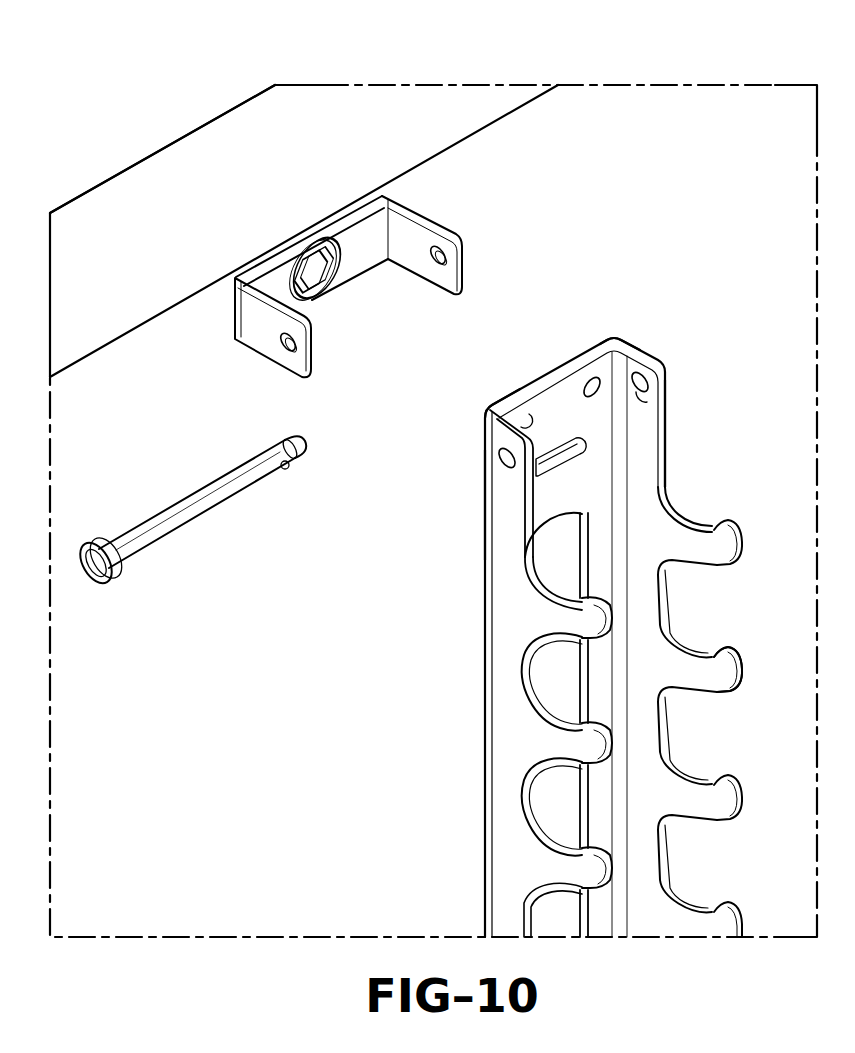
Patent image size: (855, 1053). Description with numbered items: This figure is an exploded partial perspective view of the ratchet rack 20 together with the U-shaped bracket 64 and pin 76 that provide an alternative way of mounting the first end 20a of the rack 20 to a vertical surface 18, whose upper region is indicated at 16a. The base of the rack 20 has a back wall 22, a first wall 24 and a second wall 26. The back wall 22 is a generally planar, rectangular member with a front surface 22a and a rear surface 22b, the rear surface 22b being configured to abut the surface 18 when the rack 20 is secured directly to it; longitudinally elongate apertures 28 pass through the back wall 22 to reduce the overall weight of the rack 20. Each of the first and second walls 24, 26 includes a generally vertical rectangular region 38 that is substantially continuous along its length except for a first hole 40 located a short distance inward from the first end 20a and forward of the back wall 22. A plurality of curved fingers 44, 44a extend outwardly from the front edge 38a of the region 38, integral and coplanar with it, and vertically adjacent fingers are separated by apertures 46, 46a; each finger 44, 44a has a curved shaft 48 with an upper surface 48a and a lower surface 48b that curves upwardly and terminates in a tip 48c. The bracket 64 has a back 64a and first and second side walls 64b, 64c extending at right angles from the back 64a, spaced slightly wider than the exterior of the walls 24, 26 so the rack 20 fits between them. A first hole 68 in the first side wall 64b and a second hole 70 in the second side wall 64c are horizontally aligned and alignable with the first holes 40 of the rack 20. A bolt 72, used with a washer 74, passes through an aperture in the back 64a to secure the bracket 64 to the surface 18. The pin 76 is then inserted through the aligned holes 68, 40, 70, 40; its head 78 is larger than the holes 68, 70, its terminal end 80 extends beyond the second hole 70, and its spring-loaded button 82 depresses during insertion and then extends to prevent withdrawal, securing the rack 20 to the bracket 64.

The vertical surface 18 is at (676, 133).
The upper surface of mounting structure 16a is at (165, 128).
The U-shaped bracket 64 is at (347, 288).
The back 64a is at (355, 232).
The first side wall 64b is at (238, 348).
The second side wall 64c is at (455, 262).
The first hole 68 is at (286, 352).
The second hole 70 is at (436, 264).
The bolt 72 is at (318, 272).
The washer 74 is at (306, 249).
The pin 76 is at (206, 535).
The head 78 is at (98, 570).
The terminal end 80 is at (303, 444).
The spring-loaded button 82 is at (286, 470).
The rack 20 is at (574, 620).
The first end 20a is at (664, 336).
The back wall 22 is at (503, 436).
The front surface 22a is at (557, 405).
The rear surface 22b is at (488, 415).
The first wall 24 is at (607, 710).
The second wall 26 is at (729, 695).
The aperture 28 is at (562, 540).
The rectangular region 38 is at (567, 465).
The front edge 38a is at (652, 392).
The first hole 40 is at (503, 462).
The finger 44 is at (545, 785).
The finger 44a is at (548, 660).
The aperture 46 is at (540, 710).
The aperture 46a is at (541, 593).
The curved shaft 48 is at (732, 705).
The upper surface 48a is at (723, 648).
The lower surface 48b is at (712, 690).
The tip 48c is at (724, 655).